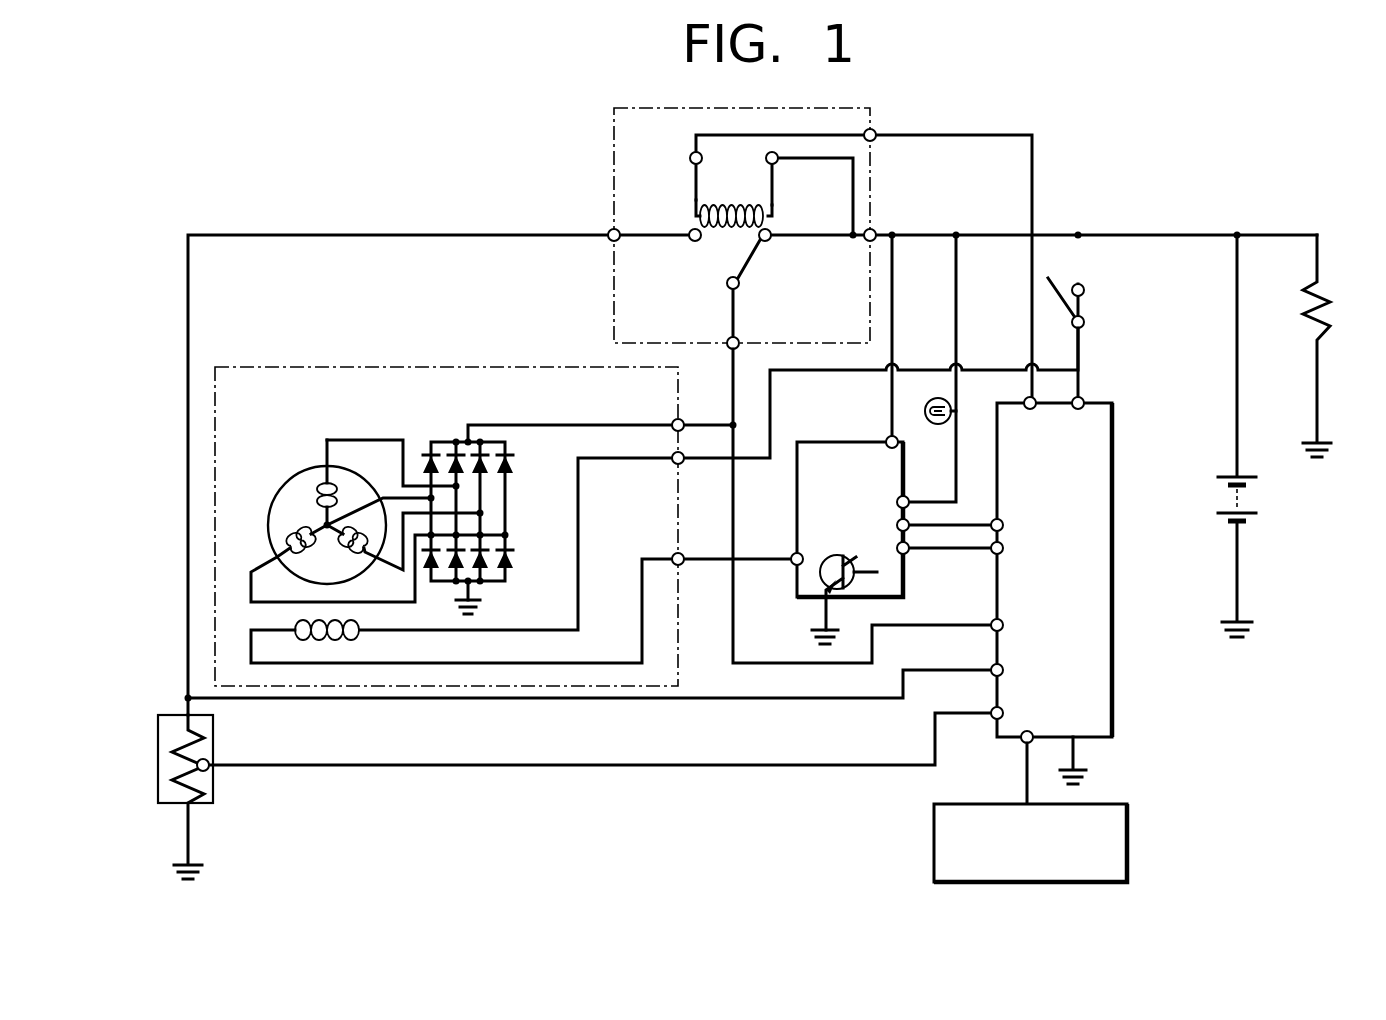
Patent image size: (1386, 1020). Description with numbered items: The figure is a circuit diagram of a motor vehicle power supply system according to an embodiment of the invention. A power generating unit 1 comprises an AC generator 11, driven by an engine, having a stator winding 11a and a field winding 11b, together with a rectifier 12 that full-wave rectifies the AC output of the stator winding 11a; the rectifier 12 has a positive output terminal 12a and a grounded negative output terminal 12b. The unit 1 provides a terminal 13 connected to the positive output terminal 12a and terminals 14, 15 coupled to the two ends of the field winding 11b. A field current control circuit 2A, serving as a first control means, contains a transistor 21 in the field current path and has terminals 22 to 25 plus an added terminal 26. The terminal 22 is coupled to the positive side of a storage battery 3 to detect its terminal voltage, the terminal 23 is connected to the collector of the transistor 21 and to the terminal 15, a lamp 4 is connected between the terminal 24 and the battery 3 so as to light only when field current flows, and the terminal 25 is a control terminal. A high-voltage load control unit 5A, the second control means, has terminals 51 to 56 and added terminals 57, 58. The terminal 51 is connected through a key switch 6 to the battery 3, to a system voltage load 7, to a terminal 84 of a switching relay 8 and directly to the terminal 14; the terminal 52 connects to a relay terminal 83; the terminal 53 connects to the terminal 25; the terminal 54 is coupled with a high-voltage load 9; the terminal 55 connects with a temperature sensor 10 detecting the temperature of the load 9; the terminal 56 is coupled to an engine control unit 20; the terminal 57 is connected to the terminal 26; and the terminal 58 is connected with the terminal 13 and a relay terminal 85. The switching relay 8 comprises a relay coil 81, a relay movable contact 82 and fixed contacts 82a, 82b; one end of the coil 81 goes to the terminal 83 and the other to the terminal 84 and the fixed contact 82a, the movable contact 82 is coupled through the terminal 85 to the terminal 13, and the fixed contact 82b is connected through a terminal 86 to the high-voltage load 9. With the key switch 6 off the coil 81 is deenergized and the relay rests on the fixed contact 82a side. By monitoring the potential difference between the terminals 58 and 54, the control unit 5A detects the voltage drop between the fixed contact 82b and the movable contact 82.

The power generating unit 1 is at (320, 365).
The field current control circuit 2A is at (851, 513).
The storage battery 3 is at (1250, 498).
The lamp 4 is at (934, 398).
The high-voltage load control unit 5A is at (1112, 478).
The key switch 6 is at (1052, 314).
The system voltage load 7 is at (1334, 294).
The switching relay 8 is at (792, 248).
The high-voltage load 9 is at (157, 712).
The temperature sensor 10 is at (208, 762).
The AC generator 11 is at (365, 505).
The stator winding 11a is at (324, 435).
The field winding 11b is at (342, 642).
The rectifier 12 is at (455, 433).
The positive output terminal 12a is at (470, 440).
The negative output terminal 12b is at (472, 587).
The terminal 13 is at (686, 424).
The terminal 14 is at (684, 460).
The terminal 15 is at (684, 556).
The engine control unit 20 is at (1127, 822).
The transistor 21 is at (836, 596).
The terminal 22 is at (886, 440).
The terminal 23 is at (792, 562).
The terminal 24 is at (906, 497).
The terminal 25 is at (906, 552).
The terminal 26 is at (909, 512).
The terminal 51 is at (1082, 402).
The terminal 52 is at (1026, 403).
The output terminal 53 is at (994, 554).
The terminal 54 is at (992, 672).
The terminal 55 is at (994, 724).
The terminal 56 is at (1026, 748).
The terminal 57 is at (992, 520).
The terminal 58 is at (992, 628).
The relay coil 81 is at (733, 198).
The relay movable contact 82 is at (750, 259).
The fixed contact 82a is at (768, 229).
The fixed contact 82b is at (690, 229).
The terminal 83 is at (876, 130).
The terminal 84 is at (876, 230).
The terminal 85 is at (734, 348).
The terminal 86 is at (608, 240).